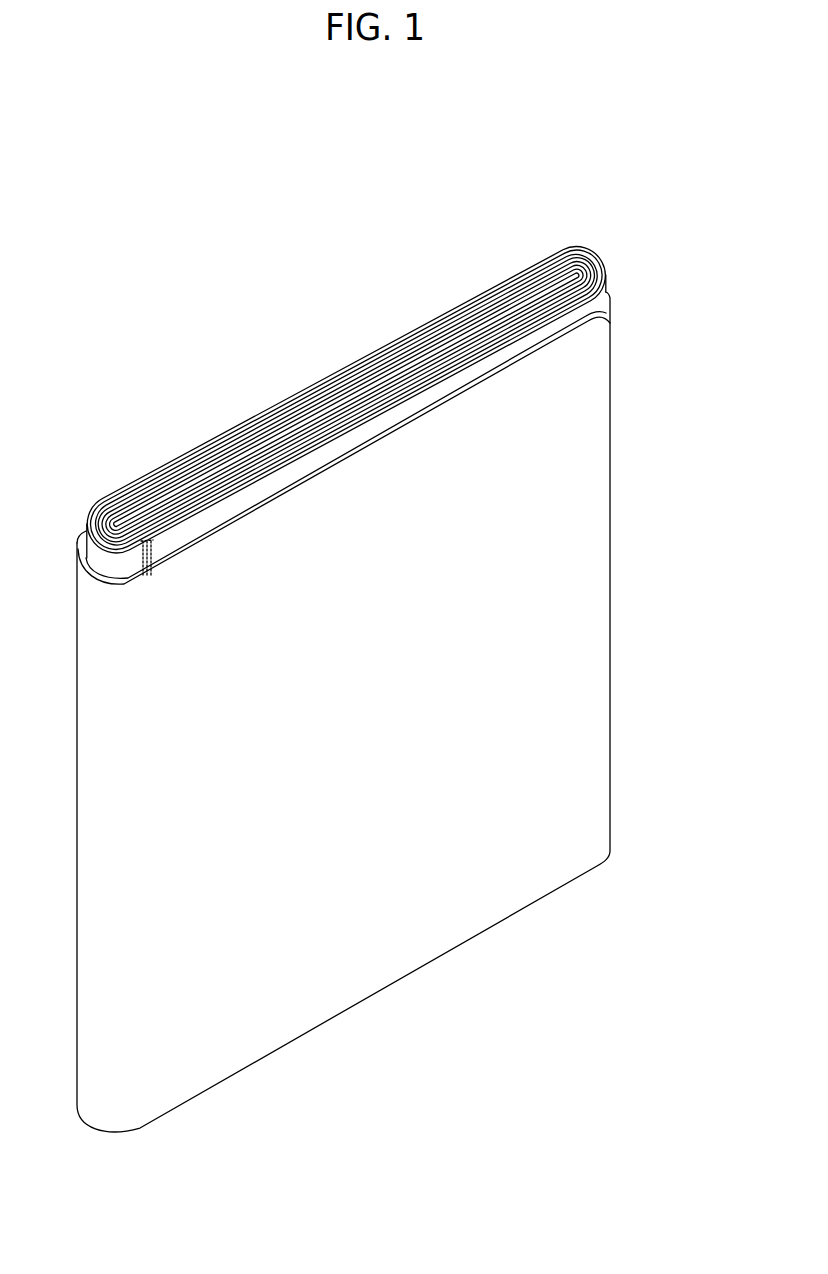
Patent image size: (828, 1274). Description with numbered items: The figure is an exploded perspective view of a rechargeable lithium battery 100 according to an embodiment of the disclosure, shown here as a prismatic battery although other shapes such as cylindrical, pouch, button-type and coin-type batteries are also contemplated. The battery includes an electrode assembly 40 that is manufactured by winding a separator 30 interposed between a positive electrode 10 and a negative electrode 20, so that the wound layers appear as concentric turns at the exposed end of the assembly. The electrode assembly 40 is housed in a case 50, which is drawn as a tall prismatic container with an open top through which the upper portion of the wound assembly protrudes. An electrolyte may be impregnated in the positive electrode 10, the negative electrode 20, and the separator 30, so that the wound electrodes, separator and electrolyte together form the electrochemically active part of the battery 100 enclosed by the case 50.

The rechargeable lithium battery 100 is at (326, 129).
The positive electrode 10 is at (606, 268).
The negative electrode 20 is at (563, 262).
The separator 30 is at (586, 257).
The electrode assembly 40 is at (370, 381).
The case 50 is at (596, 563).